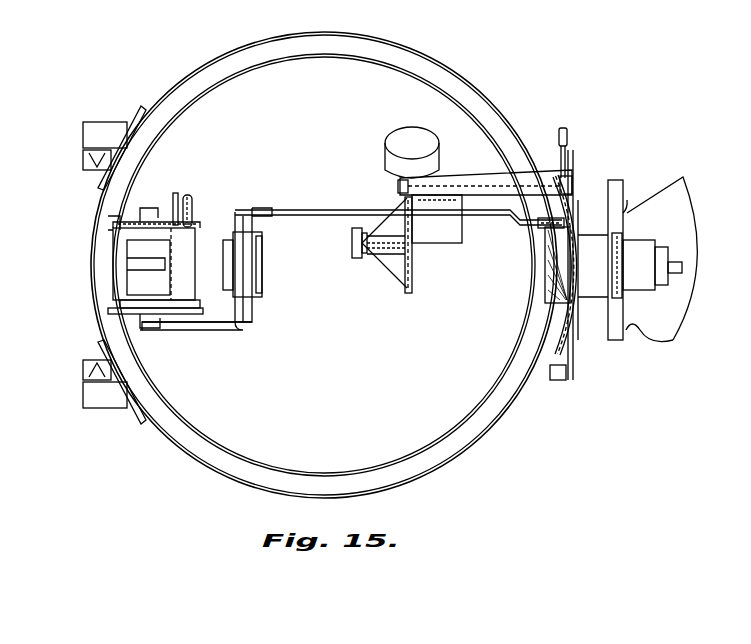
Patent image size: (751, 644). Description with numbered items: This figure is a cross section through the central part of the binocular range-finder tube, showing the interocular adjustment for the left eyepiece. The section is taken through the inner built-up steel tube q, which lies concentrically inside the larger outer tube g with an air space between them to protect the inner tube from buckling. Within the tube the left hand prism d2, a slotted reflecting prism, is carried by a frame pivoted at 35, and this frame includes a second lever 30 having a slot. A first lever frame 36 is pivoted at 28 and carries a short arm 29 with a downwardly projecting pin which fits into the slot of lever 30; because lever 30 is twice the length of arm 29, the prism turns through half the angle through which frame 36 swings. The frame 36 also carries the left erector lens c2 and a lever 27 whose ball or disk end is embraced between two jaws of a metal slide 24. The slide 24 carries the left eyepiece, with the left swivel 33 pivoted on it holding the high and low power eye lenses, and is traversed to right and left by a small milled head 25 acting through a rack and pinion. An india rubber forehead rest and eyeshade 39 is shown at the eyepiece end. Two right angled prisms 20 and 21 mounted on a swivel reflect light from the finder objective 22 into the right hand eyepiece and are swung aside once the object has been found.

The outer casing ring g is at (395, 44).
The inner built-up steel tube q is at (330, 55).
The second lever 30 is at (128, 215).
The pivot of the prism frame 35 is at (130, 228).
The left hand prism d2 is at (130, 245).
The pivot of the lever frame 28 is at (156, 210).
The short arm 29 is at (176, 208).
The finder objective 22 is at (194, 210).
The lever 27 is at (302, 216).
The frame 36 is at (245, 322).
The left erector lens c2 is at (262, 264).
The right angled prism 21 is at (362, 252).
The right angled prism 20 is at (450, 236).
The metal slide 24 is at (565, 222).
The left swivel 33 is at (573, 304).
The milled head 25 is at (567, 372).
The forehead rest and eyeshade 39 is at (684, 202).